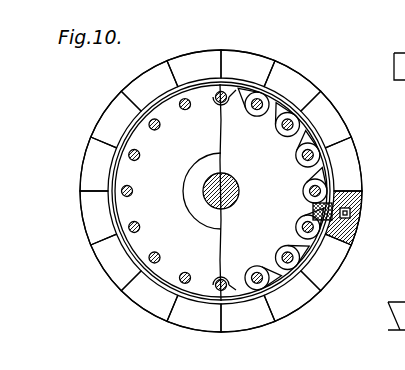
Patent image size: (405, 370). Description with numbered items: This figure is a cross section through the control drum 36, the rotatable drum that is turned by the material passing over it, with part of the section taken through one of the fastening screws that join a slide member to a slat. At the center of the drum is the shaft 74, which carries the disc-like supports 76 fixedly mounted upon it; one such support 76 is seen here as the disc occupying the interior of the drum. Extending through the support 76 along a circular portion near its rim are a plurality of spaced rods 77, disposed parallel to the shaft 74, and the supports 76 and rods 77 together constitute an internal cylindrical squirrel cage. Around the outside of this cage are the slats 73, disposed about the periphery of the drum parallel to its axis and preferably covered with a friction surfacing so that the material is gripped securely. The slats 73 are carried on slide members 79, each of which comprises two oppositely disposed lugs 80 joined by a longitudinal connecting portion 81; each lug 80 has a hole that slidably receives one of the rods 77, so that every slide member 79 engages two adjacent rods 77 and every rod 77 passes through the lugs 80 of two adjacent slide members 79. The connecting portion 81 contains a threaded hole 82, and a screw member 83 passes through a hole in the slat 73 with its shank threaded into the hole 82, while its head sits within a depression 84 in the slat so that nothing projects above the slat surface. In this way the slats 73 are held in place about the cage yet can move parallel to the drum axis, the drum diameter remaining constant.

The control drum 36 is at (306, 67).
The slats 73 is at (236, 62).
The shaft 74 is at (207, 200).
The disc-like supports 76 is at (277, 152).
The rods 77 is at (137, 161).
The slide members 79 is at (305, 208).
The lugs 80 is at (288, 249).
The connecting portion 81 is at (326, 168).
The threaded hole 82 is at (333, 200).
The screw member 83 is at (351, 216).
The depression 84 is at (333, 191).